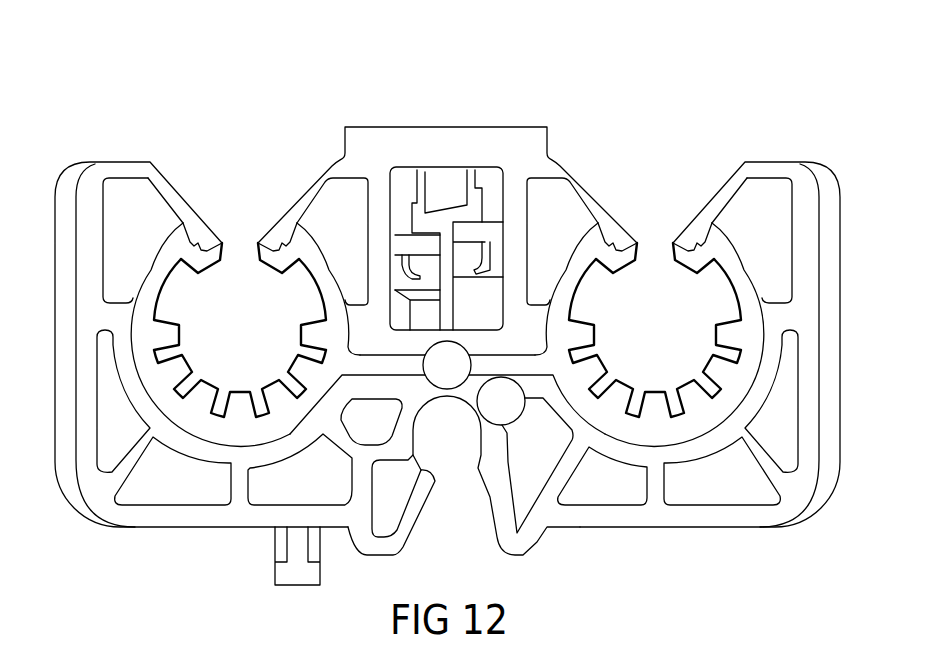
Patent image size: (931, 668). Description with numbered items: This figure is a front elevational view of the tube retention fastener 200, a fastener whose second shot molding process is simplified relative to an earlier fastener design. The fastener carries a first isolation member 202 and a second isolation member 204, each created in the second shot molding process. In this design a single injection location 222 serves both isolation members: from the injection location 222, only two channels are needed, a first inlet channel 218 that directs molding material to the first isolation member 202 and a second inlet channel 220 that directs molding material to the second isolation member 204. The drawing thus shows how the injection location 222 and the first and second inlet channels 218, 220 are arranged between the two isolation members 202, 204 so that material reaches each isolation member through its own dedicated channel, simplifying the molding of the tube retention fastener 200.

The tube retention fastener 200 is at (636, 88).
The first isolation member 202 is at (183, 417).
The second isolation member 204 is at (702, 422).
The first inlet channel 218 is at (363, 365).
The second inlet channel 220 is at (527, 365).
The injection location 222 is at (448, 366).